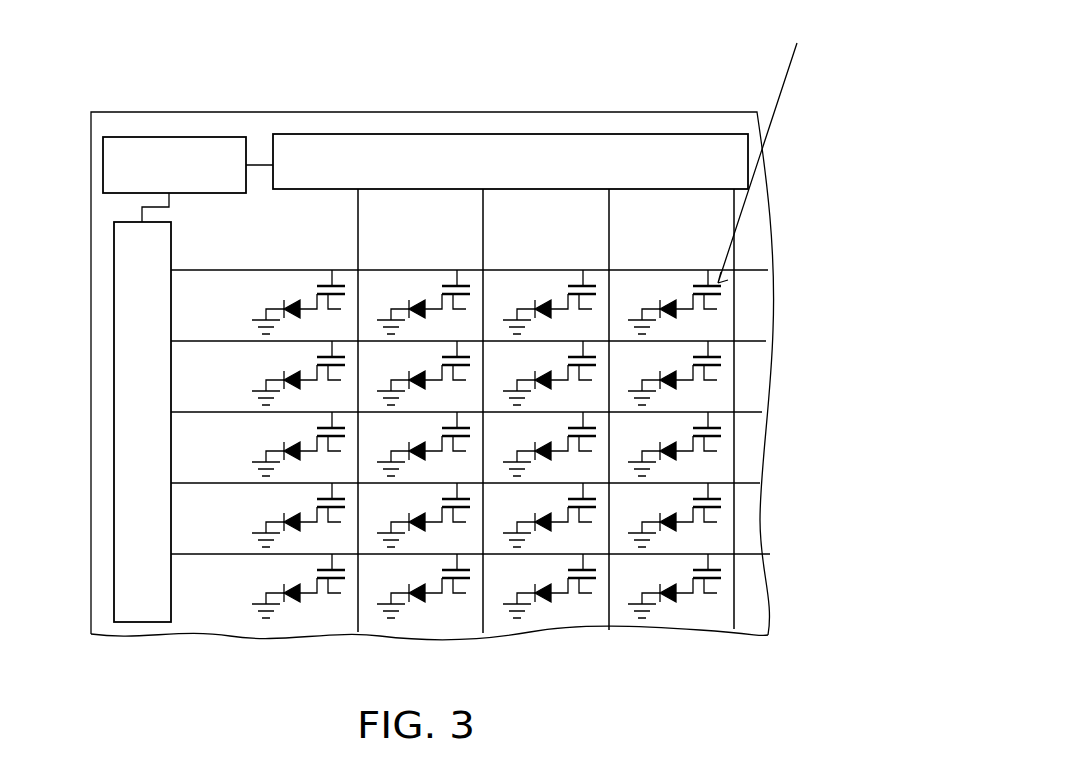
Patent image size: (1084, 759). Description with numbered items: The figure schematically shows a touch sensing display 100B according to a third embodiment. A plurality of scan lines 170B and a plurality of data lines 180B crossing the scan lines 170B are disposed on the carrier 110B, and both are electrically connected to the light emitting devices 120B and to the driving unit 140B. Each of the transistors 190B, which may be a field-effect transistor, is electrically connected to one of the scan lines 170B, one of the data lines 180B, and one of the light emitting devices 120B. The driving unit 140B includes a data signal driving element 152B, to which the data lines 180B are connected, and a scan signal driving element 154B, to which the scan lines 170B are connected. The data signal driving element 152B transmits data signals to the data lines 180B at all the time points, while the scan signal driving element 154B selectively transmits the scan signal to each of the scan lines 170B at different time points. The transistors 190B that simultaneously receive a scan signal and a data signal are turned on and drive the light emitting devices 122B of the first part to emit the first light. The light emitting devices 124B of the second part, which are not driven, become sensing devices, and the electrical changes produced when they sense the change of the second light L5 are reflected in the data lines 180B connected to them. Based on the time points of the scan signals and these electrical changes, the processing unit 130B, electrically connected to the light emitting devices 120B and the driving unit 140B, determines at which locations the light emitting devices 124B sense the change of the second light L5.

The touch sensing display 100B is at (790, 688).
The carrier 110B is at (213, 610).
The light emitting devices 120B is at (675, 298).
The light emitting devices of the first part 122B is at (390, 431).
The light emitting devices of the second part 124B is at (515, 431).
The processing unit 130B is at (216, 143).
The driving unit 140B is at (392, 345).
The data signal driving element 152B is at (352, 147).
The scan signal driving element 154B is at (127, 233).
The scan lines 170B is at (209, 270).
The data lines 180B is at (734, 222).
The transistors 190B is at (334, 264).
The second light L5 is at (785, 80).